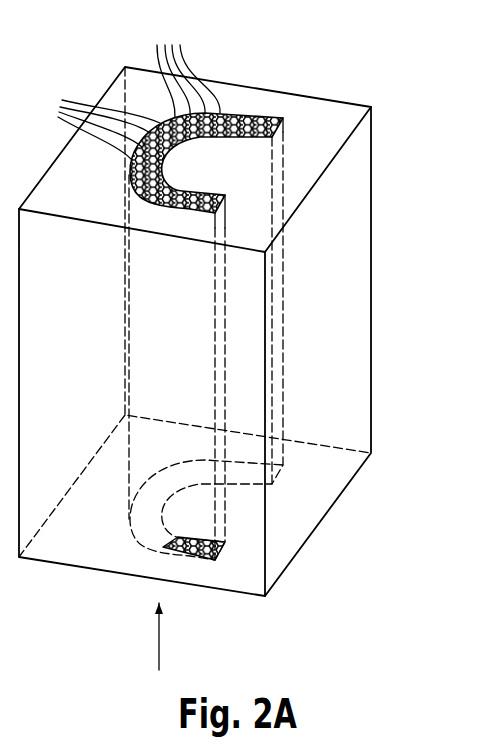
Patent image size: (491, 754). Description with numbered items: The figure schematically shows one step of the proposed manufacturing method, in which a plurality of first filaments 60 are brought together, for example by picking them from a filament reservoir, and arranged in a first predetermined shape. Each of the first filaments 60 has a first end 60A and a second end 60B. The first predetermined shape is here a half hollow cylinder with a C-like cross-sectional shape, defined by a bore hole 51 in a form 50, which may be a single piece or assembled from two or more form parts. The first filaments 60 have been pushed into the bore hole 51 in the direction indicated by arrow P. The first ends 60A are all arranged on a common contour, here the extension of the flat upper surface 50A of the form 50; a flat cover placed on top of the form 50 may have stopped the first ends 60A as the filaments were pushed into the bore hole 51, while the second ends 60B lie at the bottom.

The form 50 is at (317, 115).
The flat upper surface of the form 50A is at (305, 140).
The bore hole 51 is at (228, 106).
The first filaments 60 is at (188, 67).
The first ends of the first filaments 60A is at (89, 121).
The second ends of the first filaments 60B is at (191, 572).
The arrow indicating pushing direction P is at (159, 632).